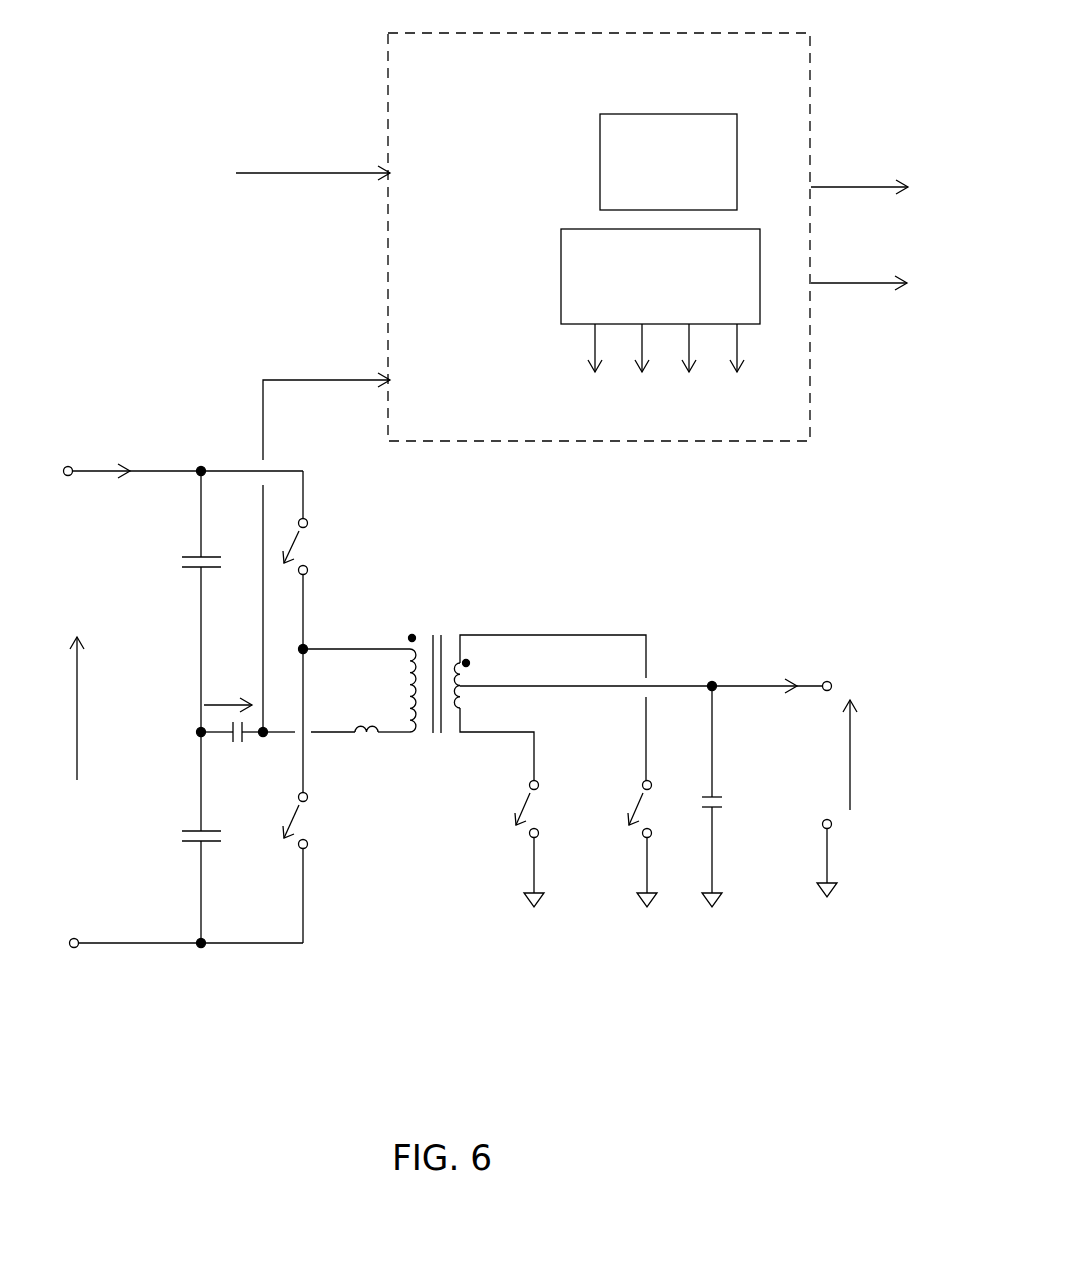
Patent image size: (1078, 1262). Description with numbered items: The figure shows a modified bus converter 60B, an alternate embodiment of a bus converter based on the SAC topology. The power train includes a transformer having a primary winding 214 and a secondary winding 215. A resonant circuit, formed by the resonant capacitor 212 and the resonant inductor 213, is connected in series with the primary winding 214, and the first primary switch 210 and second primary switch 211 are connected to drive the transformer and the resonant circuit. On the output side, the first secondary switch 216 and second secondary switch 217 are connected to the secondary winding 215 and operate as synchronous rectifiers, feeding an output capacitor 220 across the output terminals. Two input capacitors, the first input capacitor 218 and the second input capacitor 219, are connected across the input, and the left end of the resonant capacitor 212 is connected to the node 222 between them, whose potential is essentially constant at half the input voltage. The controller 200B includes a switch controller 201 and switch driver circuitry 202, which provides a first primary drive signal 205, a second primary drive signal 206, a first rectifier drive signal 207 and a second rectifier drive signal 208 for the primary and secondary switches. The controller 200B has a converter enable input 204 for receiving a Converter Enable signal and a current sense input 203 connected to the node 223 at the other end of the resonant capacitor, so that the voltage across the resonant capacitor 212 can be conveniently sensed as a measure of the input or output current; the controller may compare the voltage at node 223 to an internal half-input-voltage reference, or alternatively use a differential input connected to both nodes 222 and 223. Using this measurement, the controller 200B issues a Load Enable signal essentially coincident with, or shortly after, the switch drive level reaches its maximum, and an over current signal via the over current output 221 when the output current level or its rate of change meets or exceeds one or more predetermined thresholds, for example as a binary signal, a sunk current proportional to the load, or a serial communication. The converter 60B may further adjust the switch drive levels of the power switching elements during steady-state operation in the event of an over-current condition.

The modified bus converter 60B is at (170, 105).
The controller 200B is at (599, 237).
The switch controller 201 is at (668, 162).
The switch driver circuitry 202 is at (660, 276).
The current sense input 203 is at (370, 537).
The Converter Enable input 204 is at (295, 175).
The S1 drive signal 205 is at (597, 374).
The S2 drive signal 206 is at (644, 374).
The SR1 drive signal 207 is at (693, 374).
The SR2 drive signal 208 is at (740, 374).
The primary switch S1 210 is at (318, 654).
The primary switch S2 211 is at (321, 868).
The resonant capacitor Cr 212 is at (233, 748).
The resonant inductor Lr 213 is at (360, 730).
The primary winding 214 is at (413, 738).
The secondary winding 215 is at (460, 632).
The secondary switch SR1 216 is at (508, 841).
The secondary switch SR2 217 is at (615, 841).
The input capacitor CIN1 218 is at (176, 601).
The input capacitor CIN2 219 is at (173, 837).
The output capacitor Cout 220 is at (737, 795).
The over current output 221 is at (882, 284).
The node 222 is at (190, 728).
The node 223 is at (267, 742).